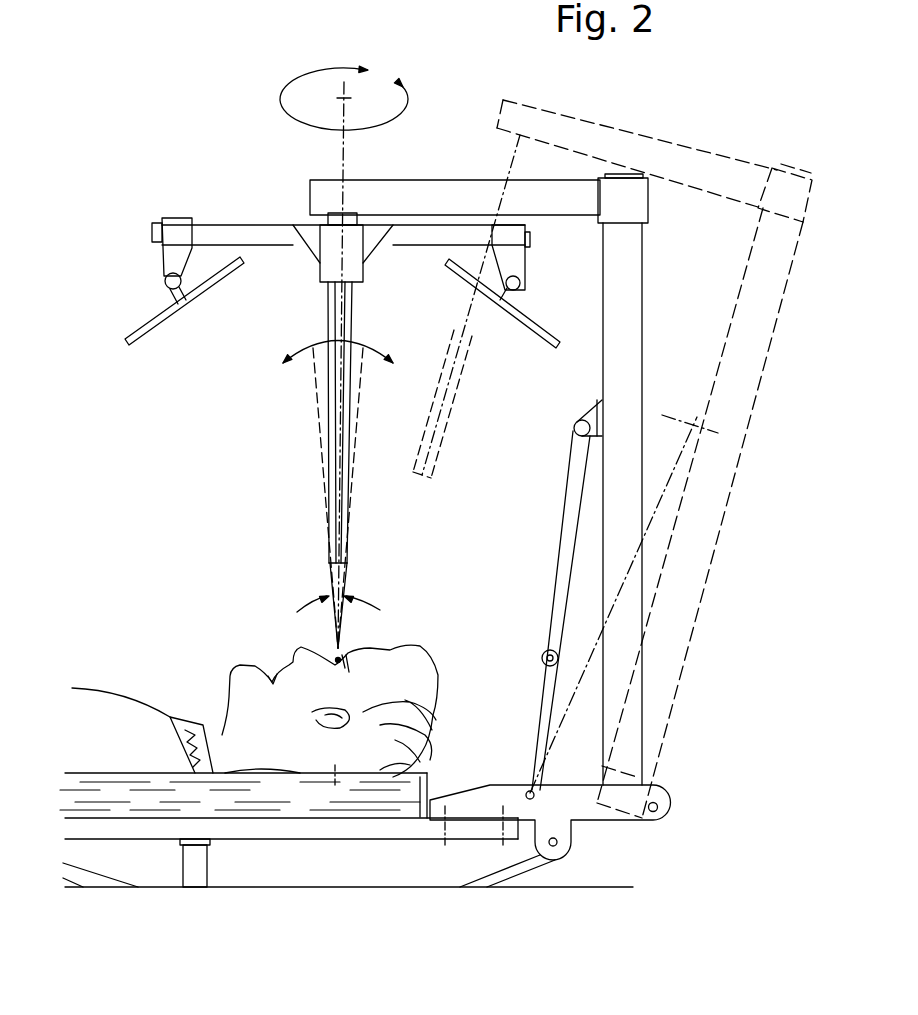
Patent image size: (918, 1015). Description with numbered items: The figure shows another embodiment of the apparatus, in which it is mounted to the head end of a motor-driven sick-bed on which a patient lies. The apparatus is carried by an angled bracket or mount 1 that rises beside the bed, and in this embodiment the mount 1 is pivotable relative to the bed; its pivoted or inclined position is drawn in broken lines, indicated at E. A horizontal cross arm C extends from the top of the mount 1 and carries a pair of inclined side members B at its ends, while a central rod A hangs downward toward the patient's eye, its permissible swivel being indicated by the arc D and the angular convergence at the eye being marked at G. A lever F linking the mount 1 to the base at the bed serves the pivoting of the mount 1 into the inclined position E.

The angled bracket or mount 1 is at (637, 319).
The probe rod A is at (322, 463).
The support rods B is at (203, 300).
The cross arm C is at (246, 224).
The swivel arc of probe D is at (338, 345).
The tilted position of stand E is at (743, 442).
The tilting lever F is at (557, 540).
The focal convergence of probe beam G is at (365, 589).